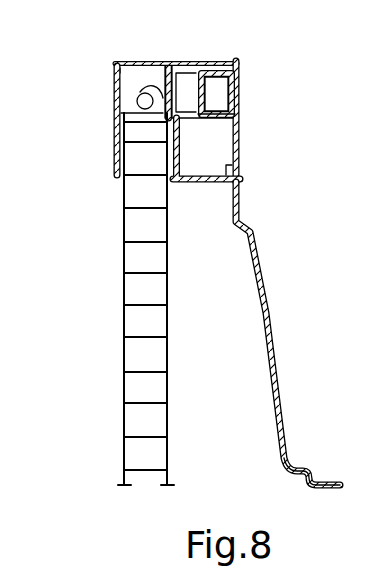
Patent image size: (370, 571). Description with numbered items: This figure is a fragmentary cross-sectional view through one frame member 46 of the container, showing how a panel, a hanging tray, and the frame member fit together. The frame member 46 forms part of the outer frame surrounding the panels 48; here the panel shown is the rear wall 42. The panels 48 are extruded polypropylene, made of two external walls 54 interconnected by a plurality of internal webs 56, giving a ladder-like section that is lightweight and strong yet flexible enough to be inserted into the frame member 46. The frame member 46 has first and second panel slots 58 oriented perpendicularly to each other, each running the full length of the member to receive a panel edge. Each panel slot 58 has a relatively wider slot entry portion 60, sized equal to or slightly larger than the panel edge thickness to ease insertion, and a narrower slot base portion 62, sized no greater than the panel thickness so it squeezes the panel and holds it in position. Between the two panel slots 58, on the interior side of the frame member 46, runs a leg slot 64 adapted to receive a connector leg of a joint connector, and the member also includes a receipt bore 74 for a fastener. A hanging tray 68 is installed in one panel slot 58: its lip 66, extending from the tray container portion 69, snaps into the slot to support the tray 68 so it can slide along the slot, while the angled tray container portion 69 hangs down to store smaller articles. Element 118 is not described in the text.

The rear wall 42 is at (91, 268).
The frame member 46 is at (181, 52).
The panels 48 is at (122, 326).
The external walls 54 is at (124, 392).
The internal webs 56 is at (152, 405).
The panel slot 58 is at (117, 177).
The slot entry portion 60 is at (222, 115).
The slot base portion 62 is at (232, 90).
The leg slot 64 is at (207, 160).
The lip 66 is at (198, 102).
The hanging tray 68 is at (278, 282).
The tray container portion 69 is at (287, 395).
The receipt bore 74 is at (137, 103).
The top cap 118 is at (140, 74).